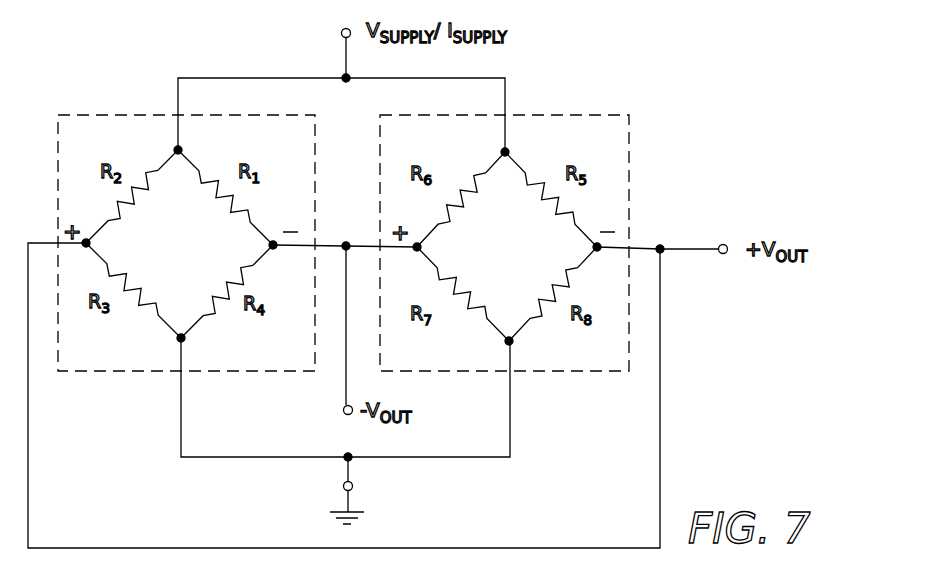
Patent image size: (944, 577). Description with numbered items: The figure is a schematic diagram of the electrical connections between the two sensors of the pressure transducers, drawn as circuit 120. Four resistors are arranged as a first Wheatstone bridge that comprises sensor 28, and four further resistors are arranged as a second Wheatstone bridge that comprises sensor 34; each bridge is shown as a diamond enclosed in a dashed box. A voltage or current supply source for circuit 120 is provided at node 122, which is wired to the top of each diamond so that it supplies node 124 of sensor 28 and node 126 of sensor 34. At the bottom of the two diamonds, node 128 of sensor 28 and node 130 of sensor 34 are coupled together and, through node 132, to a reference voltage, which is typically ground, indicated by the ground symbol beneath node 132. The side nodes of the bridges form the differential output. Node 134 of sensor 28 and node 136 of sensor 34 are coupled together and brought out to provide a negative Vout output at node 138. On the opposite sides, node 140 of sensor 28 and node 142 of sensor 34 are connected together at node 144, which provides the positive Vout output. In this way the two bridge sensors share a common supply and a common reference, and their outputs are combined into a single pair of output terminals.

The sensor 28 is at (120, 113).
The sensor 34 is at (572, 114).
The circuit 120 is at (594, 42).
The node 122 is at (341, 33).
The node 124 is at (178, 150).
The node 126 is at (505, 152).
The node 128 is at (181, 338).
The node 130 is at (509, 341).
The node 132 is at (353, 486).
The node 134 is at (273, 245).
The node 136 is at (417, 247).
The node 138 is at (343, 410).
The node 140 is at (86, 243).
The node 142 is at (597, 247).
The node 144 is at (723, 244).